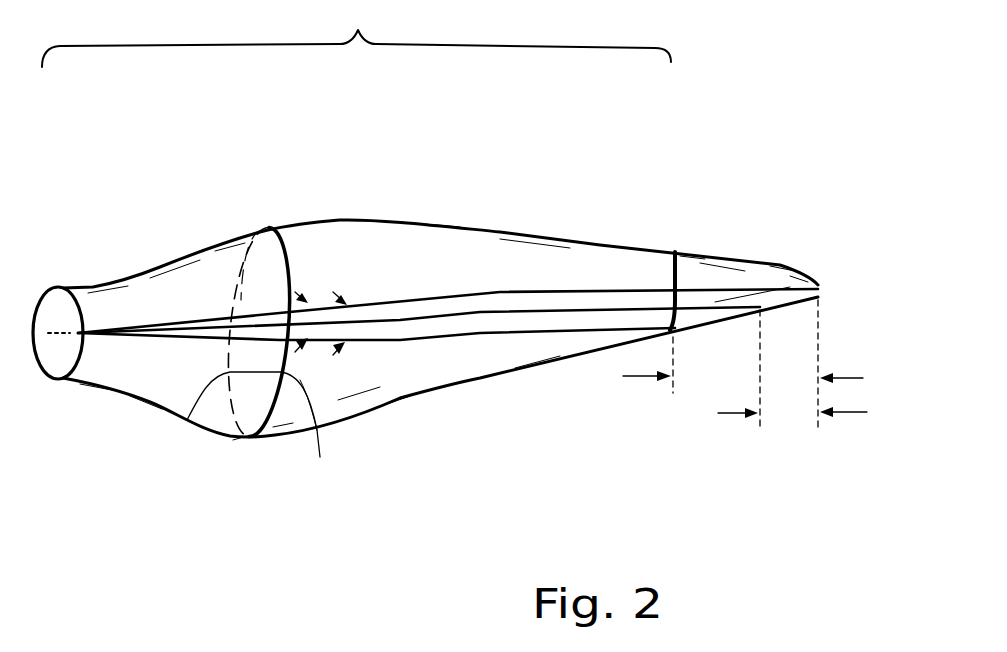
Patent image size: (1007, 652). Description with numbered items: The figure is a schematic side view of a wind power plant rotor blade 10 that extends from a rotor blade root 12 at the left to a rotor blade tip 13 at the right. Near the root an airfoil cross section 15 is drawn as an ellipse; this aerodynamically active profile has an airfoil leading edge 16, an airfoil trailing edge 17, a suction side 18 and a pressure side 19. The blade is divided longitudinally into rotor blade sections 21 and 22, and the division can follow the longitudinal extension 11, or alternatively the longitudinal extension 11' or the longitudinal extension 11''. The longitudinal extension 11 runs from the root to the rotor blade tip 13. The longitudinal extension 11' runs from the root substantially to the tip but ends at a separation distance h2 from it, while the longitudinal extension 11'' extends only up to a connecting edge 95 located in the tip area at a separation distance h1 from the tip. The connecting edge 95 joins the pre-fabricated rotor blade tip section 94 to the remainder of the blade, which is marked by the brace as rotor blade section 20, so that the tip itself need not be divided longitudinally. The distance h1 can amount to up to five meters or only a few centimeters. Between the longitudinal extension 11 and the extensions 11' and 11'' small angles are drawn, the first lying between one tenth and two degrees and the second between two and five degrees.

The rotor blade 10 is at (516, 204).
The longitudinal extension 11 is at (649, 286).
The longitudinal extension 11' is at (738, 303).
The longitudinal extension 11'' is at (585, 380).
The rotor blade root 12 is at (57, 363).
The rotor blade tip 13 is at (818, 280).
The airfoil cross section 15 is at (295, 265).
The airfoil leading edge 16 is at (262, 230).
The airfoil trailing edge 17 is at (233, 440).
The suction side 18 is at (317, 430).
The pressure side 19 is at (187, 420).
The rotor blade section 20 is at (356, 34).
The rotor blade section 21 is at (427, 247).
The rotor blade section 22 is at (400, 380).
The rotor blade tip section 94 is at (778, 273).
The connecting edge 95 is at (693, 257).
The separation distance h1 is at (846, 366).
The separation distance h2 is at (848, 426).